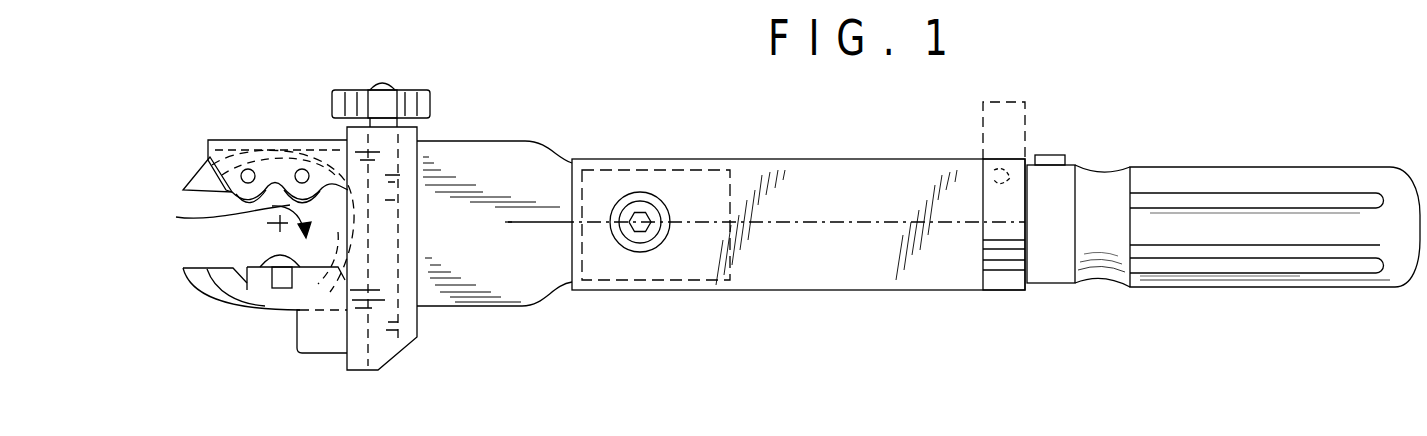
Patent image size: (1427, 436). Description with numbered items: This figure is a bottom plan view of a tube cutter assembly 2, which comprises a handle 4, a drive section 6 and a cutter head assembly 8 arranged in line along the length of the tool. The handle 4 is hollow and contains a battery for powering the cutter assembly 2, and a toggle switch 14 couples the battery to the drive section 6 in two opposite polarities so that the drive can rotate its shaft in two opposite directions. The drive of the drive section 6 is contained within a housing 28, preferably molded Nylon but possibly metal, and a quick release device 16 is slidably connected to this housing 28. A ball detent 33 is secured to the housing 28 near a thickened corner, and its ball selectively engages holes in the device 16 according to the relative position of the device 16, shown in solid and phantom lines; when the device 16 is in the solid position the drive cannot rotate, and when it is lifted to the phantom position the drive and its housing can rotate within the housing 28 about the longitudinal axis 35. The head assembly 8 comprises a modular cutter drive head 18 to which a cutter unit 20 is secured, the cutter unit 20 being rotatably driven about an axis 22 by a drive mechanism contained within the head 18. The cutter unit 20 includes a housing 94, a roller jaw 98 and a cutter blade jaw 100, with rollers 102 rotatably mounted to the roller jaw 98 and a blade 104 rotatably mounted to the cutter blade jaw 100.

The cutter assembly 2 is at (691, 108).
The handle 4 is at (1285, 166).
The drive section 6 is at (874, 156).
The cutter head assembly 8 is at (468, 118).
The toggle switch 14 is at (1040, 155).
The quick release device 16 is at (1000, 205).
The cutter drive head 18 is at (524, 160).
The cutter unit 20 is at (306, 116).
The axis 22 is at (270, 224).
The housing 28 is at (773, 160).
The ball detent 33 is at (998, 152).
The longitudinal axis 35 is at (827, 224).
The housing 94 is at (417, 238).
The roller jaw 98 is at (210, 157).
The cutter blade jaw 100 is at (232, 282).
The rollers 102 is at (270, 198).
The blade 104 is at (282, 262).